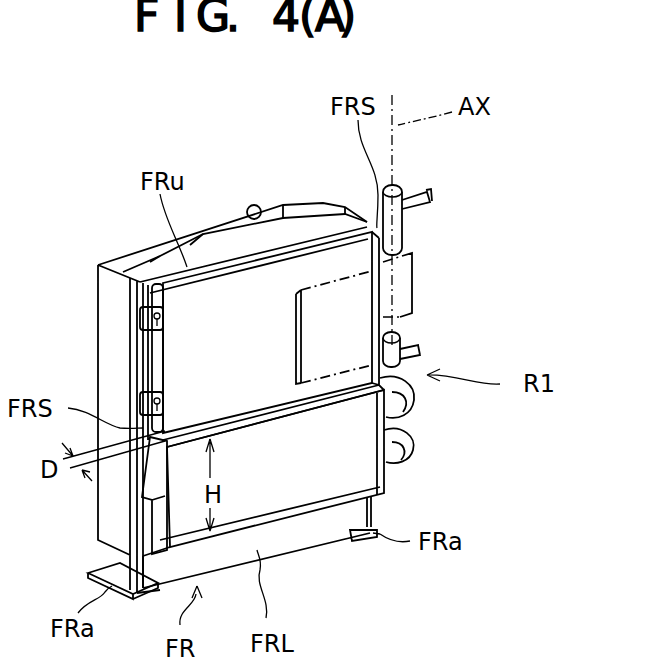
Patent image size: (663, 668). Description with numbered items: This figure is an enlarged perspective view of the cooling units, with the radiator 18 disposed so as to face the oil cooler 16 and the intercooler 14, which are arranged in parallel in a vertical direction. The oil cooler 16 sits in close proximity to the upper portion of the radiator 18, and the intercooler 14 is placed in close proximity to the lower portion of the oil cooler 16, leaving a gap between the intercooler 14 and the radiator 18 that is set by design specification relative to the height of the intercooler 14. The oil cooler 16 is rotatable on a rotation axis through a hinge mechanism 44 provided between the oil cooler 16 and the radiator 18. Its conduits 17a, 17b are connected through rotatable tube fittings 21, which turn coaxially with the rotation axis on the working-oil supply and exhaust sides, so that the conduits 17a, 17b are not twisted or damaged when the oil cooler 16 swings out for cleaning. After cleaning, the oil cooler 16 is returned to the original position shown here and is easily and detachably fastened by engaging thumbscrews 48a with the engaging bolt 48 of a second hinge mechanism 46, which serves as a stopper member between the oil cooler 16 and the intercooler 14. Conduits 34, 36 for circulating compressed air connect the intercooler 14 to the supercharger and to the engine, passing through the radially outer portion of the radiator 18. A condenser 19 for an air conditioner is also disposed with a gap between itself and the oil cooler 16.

The intercooler 14 is at (316, 496).
The oil cooler 16 is at (337, 257).
The conduit of the oil cooler 17a is at (430, 190).
The conduit of the oil cooler 17b is at (418, 350).
The radiator 18 is at (287, 233).
The condenser 19 is at (301, 310).
The rotatable tube fitting 21 is at (402, 226).
The conduit 34 is at (416, 394).
The conduit 36 is at (416, 450).
The hinge mechanism 44 is at (422, 251).
The hinge mechanism 46 is at (145, 398).
The engaging bolt 48 is at (166, 297).
The thumbscrew 48a is at (160, 316).